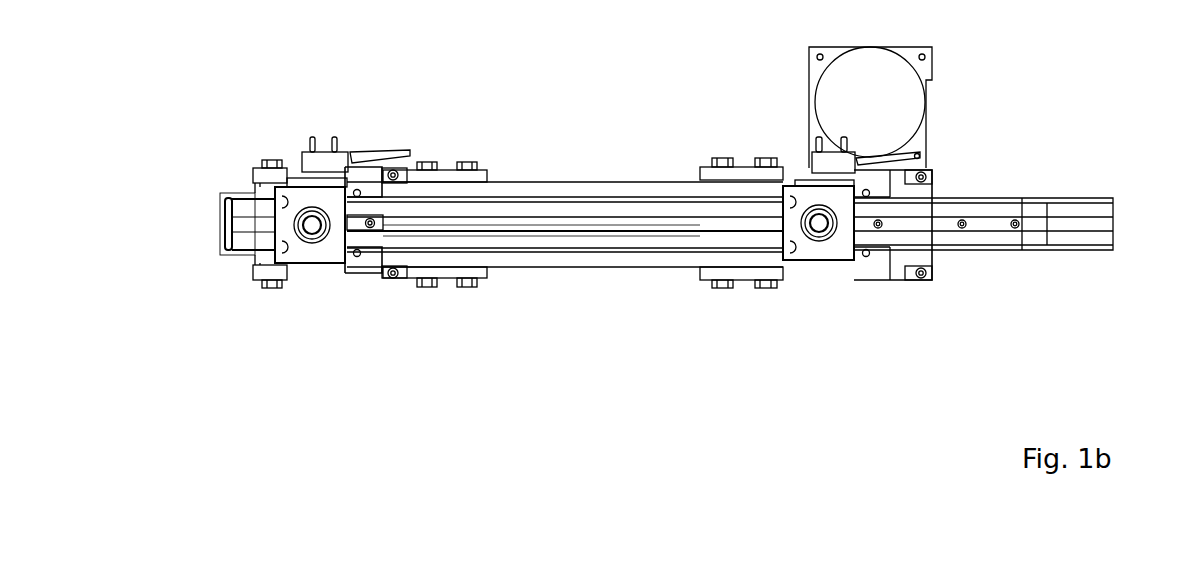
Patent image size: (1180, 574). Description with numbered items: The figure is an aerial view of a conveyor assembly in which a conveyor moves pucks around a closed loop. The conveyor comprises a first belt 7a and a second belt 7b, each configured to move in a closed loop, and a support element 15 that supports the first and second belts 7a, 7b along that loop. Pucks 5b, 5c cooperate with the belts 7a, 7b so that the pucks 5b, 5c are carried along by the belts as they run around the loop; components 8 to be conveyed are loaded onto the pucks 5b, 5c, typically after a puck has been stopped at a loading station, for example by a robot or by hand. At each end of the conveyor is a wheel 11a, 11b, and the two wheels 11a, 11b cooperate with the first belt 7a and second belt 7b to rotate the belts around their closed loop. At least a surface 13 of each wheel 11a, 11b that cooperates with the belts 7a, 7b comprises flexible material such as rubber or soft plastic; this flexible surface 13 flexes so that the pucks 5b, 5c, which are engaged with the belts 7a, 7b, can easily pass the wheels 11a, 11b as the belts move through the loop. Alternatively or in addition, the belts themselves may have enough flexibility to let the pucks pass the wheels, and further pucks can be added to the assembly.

The puck 5b is at (305, 196).
The puck 5c is at (815, 198).
The first belt 7a is at (508, 208).
The second belt 7b is at (508, 237).
The component 8 is at (310, 228).
The wheel 11a is at (247, 223).
The wheel 11b is at (1100, 222).
The surface of wheel 13 is at (258, 225).
The support element 15 is at (430, 223).